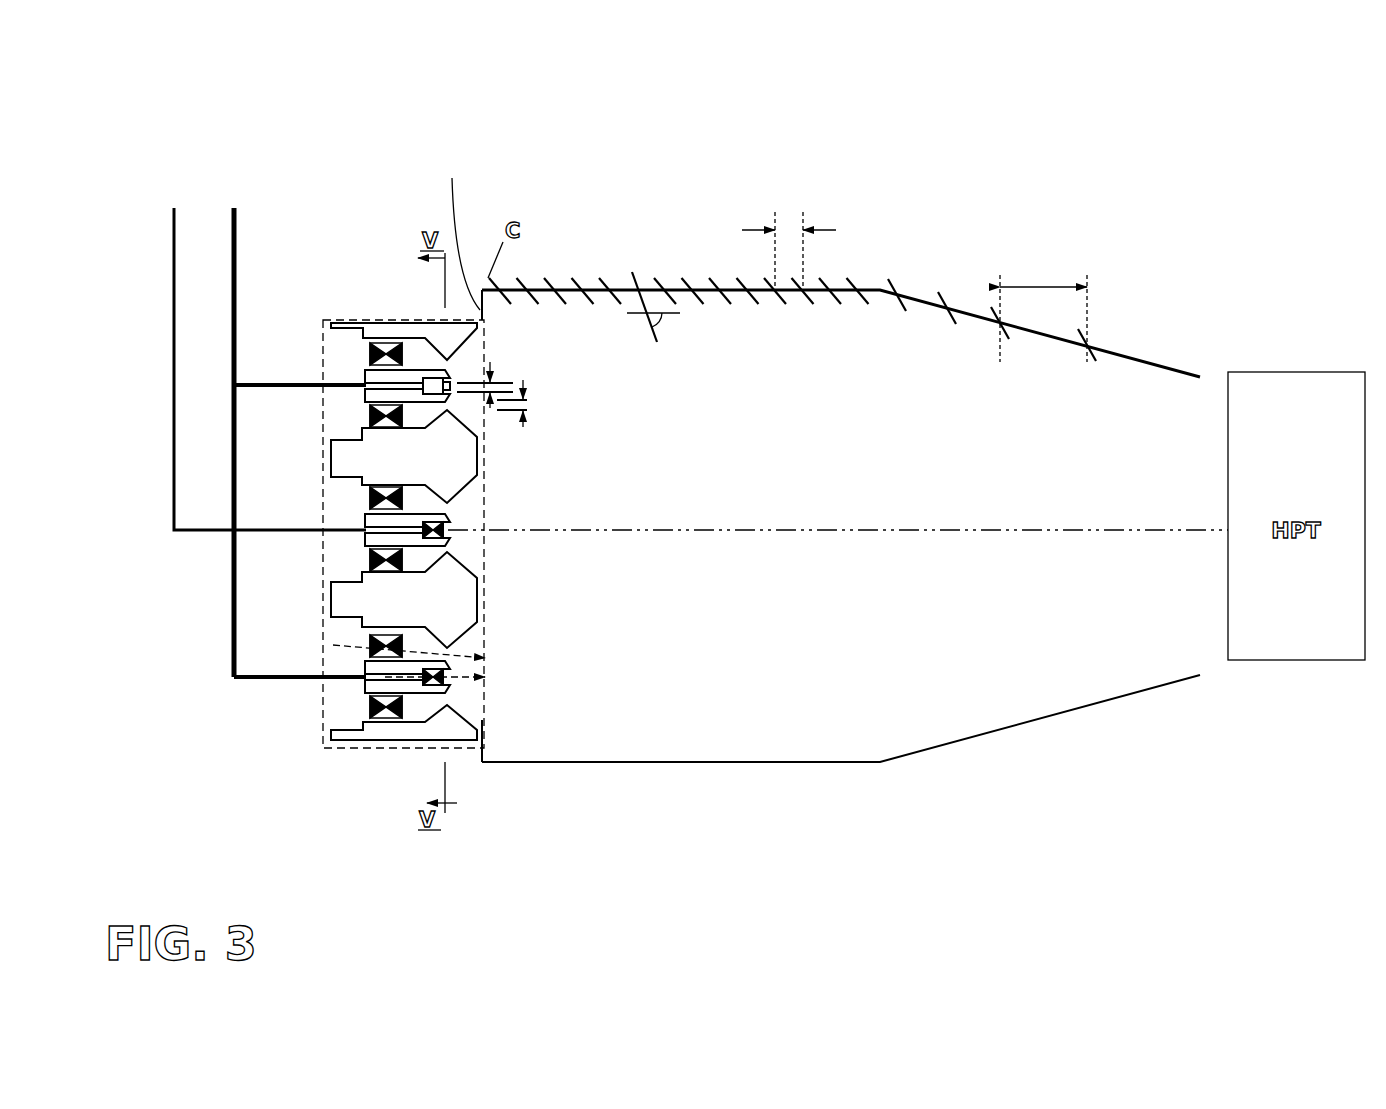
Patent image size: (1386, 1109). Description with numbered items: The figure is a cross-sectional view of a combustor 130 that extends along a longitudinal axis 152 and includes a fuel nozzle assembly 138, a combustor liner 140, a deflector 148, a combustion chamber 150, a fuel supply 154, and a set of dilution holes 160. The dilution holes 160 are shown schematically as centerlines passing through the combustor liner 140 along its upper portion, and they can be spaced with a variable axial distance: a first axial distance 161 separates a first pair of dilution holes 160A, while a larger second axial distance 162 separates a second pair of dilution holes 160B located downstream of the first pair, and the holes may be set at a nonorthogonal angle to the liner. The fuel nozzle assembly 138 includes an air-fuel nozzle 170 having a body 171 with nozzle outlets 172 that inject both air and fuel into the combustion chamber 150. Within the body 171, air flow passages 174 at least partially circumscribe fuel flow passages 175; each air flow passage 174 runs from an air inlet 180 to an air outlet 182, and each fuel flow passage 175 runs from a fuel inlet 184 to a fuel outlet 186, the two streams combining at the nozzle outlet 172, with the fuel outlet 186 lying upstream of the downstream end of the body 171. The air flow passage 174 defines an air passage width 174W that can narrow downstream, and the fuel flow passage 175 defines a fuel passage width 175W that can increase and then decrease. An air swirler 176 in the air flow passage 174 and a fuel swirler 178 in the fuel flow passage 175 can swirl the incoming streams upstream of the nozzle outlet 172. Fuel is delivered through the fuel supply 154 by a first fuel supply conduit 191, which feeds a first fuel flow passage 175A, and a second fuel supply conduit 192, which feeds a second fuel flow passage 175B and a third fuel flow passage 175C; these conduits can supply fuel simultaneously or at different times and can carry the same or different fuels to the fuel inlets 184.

The combustor 130 is at (1218, 140).
The fuel nozzle assembly 138 is at (305, 737).
The combustor liner 140 is at (1168, 365).
The deflector 148 is at (465, 229).
The combustion chamber 150 is at (788, 497).
The longitudinal axis 152 is at (938, 530).
The fuel supply 154 is at (211, 183).
The set of dilution holes 160 is at (557, 263).
The first pair of dilution holes 160A is at (795, 307).
The second pair of dilution holes 160B is at (1047, 352).
The first axial distance 161 is at (810, 229).
The second axial distance 162 is at (1035, 283).
The air-fuel nozzle 170 is at (345, 752).
The body 171 is at (465, 440).
The nozzle outlet 172 is at (495, 664).
The air flow passage 174 is at (362, 637).
The air passage width 174W is at (523, 427).
The fuel flow passage 175 is at (375, 538).
The first fuel flow passage 175A is at (388, 530).
The second fuel flow passage 175B is at (390, 385).
The third fuel flow passage 175C is at (383, 675).
The fuel passage width 175W is at (493, 365).
The air swirler 176 is at (402, 500).
The fuel swirler 178 is at (443, 532).
The air inlet 180 is at (330, 365).
The air outlet 182 is at (448, 362).
The fuel inlet 184 is at (363, 340).
The fuel outlet 186 is at (448, 382).
The first fuel supply conduit 191 is at (172, 225).
The second fuel supply conduit 192 is at (237, 220).